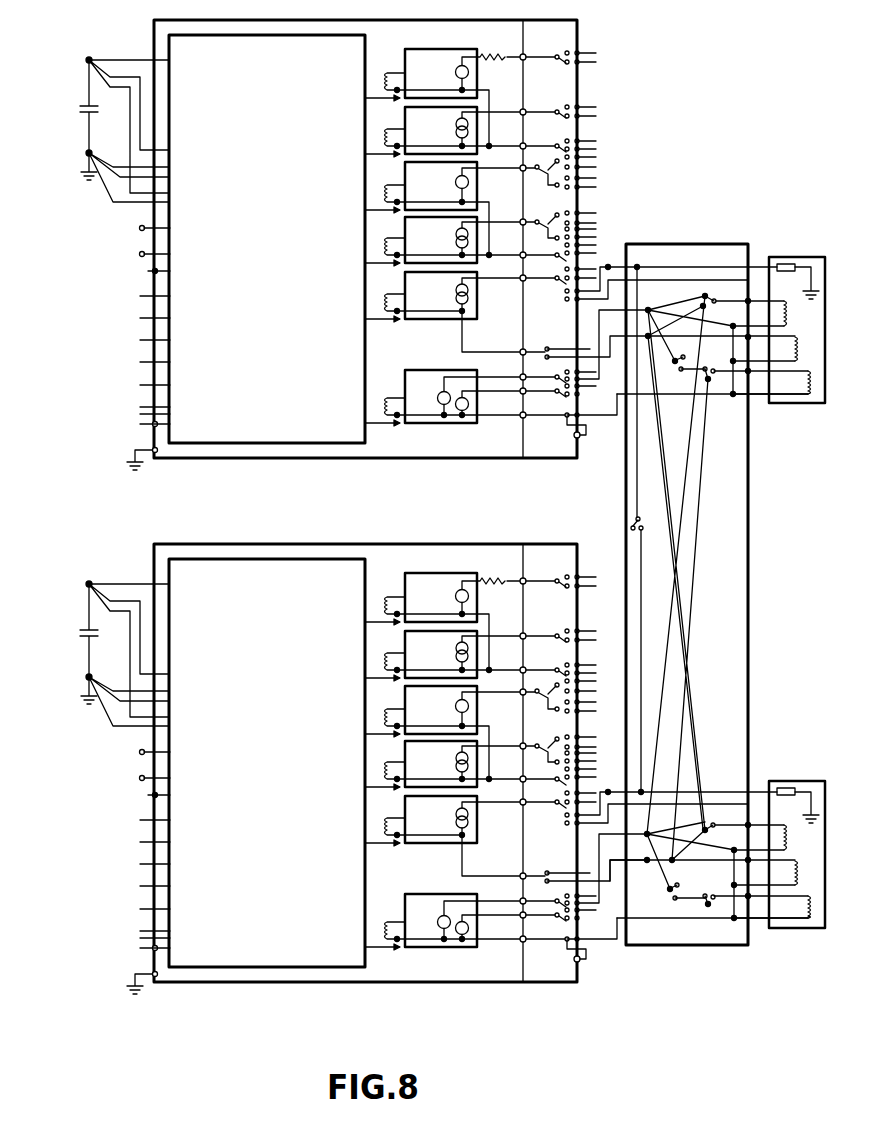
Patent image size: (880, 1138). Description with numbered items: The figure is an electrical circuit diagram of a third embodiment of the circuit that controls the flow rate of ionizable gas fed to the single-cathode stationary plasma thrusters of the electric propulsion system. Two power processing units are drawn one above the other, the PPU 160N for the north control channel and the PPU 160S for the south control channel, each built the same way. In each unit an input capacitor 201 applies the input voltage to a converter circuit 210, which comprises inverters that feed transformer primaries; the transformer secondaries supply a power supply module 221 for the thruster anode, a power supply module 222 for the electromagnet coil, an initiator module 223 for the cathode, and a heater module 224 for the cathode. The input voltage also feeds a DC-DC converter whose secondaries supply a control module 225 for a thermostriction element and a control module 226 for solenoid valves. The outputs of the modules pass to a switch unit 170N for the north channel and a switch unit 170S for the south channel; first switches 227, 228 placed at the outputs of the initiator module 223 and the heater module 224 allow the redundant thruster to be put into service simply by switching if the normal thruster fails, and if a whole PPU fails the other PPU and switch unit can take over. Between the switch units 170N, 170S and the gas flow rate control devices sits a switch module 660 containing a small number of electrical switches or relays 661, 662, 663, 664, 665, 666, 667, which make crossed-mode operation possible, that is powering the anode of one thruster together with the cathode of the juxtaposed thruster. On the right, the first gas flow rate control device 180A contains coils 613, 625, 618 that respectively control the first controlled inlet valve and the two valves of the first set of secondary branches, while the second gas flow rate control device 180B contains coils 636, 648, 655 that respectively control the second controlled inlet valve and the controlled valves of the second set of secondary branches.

The PPU 160N is at (228, 460).
The PPU 160S is at (352, 794).
The switch unit 170N is at (571, 289).
The switch unit 170S is at (581, 813).
The input capacitor 201 is at (80, 108).
The converter circuit 210 is at (307, 262).
The power supply module 221 is at (460, 50).
The power supply module 222 is at (417, 117).
The initiator module 223 is at (417, 172).
The heater module 224 is at (417, 227).
The control module 225 is at (417, 282).
The control module 226 is at (417, 380).
The first switch 227 is at (541, 163).
The first switch 228 is at (541, 228).
The switch module 660 is at (693, 605).
The electrical switch or relay 661 is at (711, 296).
The electrical switch or relay 662 is at (678, 373).
The electrical switch or relay 663 is at (716, 376).
The electrical switch or relay 664 is at (631, 524).
The electrical switch or relay 665 is at (711, 820).
The electrical switch or relay 666 is at (668, 877).
The electrical switch or relay 667 is at (716, 900).
The first gas flow rate control device 180A is at (793, 314).
The second gas flow rate control device 180B is at (794, 838).
The coil 613 is at (804, 314).
The coil 625 is at (789, 361).
The coil 618 is at (814, 396).
The coil 636 is at (804, 838).
The coil 655 is at (789, 885).
The coil 648 is at (814, 919).